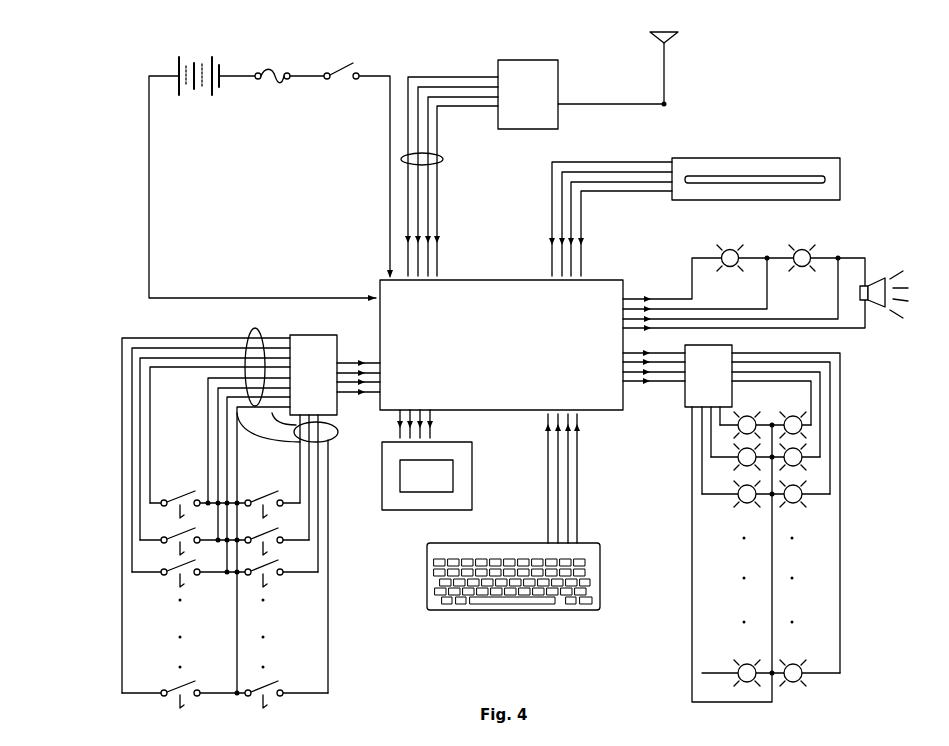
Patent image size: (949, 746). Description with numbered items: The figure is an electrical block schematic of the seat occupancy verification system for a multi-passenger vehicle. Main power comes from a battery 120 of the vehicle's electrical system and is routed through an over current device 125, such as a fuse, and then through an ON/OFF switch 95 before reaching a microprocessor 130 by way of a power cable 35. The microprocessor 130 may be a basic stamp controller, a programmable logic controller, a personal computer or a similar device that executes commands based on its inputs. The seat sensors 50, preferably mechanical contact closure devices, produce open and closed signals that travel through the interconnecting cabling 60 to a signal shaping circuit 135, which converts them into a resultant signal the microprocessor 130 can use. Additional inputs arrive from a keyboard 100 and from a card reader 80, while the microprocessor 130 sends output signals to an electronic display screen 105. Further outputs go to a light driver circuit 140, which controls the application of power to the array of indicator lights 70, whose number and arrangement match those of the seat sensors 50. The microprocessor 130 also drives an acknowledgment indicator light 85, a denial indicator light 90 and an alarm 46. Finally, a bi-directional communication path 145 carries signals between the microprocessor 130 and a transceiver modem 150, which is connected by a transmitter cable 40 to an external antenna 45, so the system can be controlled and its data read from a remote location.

The battery 120 is at (176, 85).
The over current device 125 is at (268, 82).
The ON/OFF switch 95 is at (339, 63).
The transceiver modem 150 is at (530, 97).
The bi-directional communication path 145 is at (440, 163).
The transmitter cable 40 is at (612, 105).
The external antenna 45 is at (665, 78).
The card reader 80 is at (762, 165).
The acknowledgment indicator light 85 is at (735, 250).
The denial indicator light 90 is at (808, 250).
The alarm 46 is at (873, 282).
The power cable 35 is at (343, 297).
The microprocessor 130 is at (555, 378).
The signal shaping circuit 135 is at (315, 352).
The interconnecting cabling 60 is at (250, 330).
The seat sensors 50 is at (160, 538).
The electronic display screen 105 is at (445, 470).
The keyboard 100 is at (586, 590).
The light driver circuit 140 is at (698, 388).
The indicator lights 70 is at (801, 426).